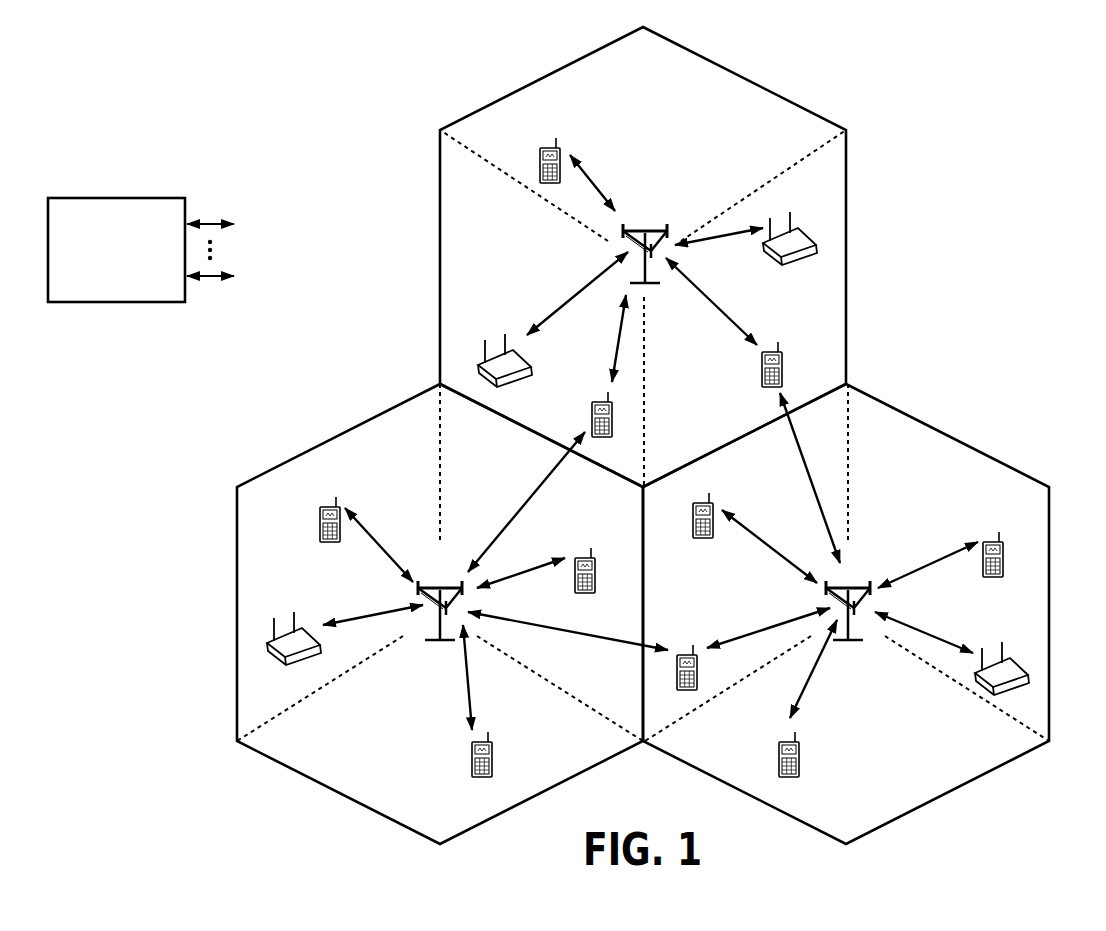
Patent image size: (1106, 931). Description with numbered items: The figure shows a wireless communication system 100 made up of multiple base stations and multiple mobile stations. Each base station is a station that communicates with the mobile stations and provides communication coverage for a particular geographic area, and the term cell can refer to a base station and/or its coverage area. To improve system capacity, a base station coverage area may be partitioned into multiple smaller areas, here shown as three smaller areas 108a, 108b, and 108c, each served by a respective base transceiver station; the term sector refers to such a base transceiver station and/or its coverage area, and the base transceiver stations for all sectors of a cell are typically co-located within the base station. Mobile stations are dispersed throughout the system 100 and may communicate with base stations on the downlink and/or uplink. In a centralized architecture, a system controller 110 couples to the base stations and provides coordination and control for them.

The wireless communication system 100 is at (988, 93).
The smaller area 108a is at (643, 153).
The smaller area 108b is at (548, 349).
The smaller area 108c is at (713, 415).
The system controller 110 is at (113, 197).